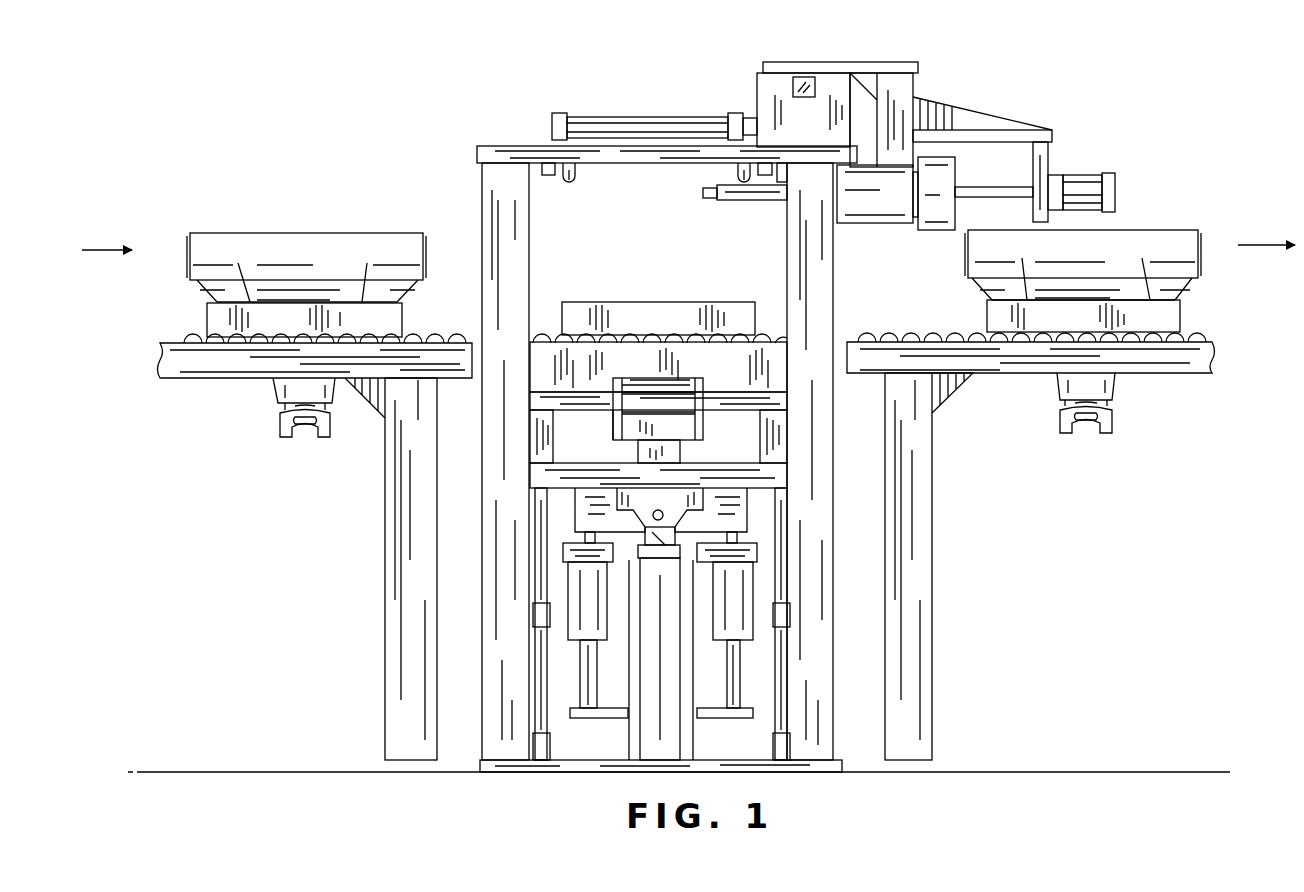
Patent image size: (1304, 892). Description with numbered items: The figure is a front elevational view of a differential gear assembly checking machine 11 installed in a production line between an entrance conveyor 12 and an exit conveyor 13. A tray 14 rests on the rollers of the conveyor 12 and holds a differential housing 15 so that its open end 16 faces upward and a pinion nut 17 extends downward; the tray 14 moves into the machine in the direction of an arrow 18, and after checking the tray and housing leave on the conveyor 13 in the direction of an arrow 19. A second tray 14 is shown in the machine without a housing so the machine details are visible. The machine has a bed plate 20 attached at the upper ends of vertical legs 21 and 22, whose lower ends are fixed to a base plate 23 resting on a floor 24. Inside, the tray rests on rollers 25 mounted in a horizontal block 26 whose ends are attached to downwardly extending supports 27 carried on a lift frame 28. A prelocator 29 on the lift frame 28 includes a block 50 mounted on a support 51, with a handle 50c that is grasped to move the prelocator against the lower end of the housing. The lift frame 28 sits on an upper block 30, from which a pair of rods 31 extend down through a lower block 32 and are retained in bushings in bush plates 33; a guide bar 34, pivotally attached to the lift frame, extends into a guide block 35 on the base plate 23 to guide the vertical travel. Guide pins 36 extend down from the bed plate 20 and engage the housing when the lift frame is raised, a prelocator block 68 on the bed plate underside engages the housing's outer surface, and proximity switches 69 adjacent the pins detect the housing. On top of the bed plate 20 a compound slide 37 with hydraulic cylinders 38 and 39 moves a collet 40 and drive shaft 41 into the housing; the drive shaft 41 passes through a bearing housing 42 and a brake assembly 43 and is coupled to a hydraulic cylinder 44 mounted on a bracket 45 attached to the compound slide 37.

The checking apparatus 11 is at (427, 95).
The entrance conveyor 12 is at (192, 380).
The exit conveyor 13 is at (1187, 377).
The tray 14 is at (620, 303).
The differential housing 15 is at (183, 265).
The open end 16 is at (280, 233).
The pinion nut 17 is at (300, 432).
The arrow 18 is at (95, 250).
The arrow 19 is at (1265, 245).
The bed plate 20 is at (478, 153).
The leg 21 is at (497, 493).
The leg 22 is at (823, 548).
The base plate 23 is at (600, 763).
The floor 24 is at (268, 772).
The rollers 25 is at (548, 337).
The block 26 is at (540, 400).
The supports 27 is at (540, 437).
The lift frame 28 is at (776, 478).
The prelocator 29 is at (615, 418).
The upper block 30 is at (580, 508).
The rods 31 is at (583, 683).
The lower block 32 is at (565, 548).
The bush plates 33 is at (572, 615).
The guide bar 34 is at (690, 540).
The guide block 35 is at (683, 740).
The guide pins 36 is at (575, 178).
The compound slide 37 is at (940, 83).
The hydraulic cylinder 38 is at (615, 117).
The hydraulic cylinder 39 is at (804, 77).
The collet 40 is at (705, 195).
The drive shaft 41 is at (975, 193).
The bearing housing 42 is at (885, 223).
The brake assembly 43 is at (932, 232).
The hydraulic cylinder 44 is at (1090, 185).
The bracket 45 is at (1043, 155).
The block 50 is at (680, 423).
The handle 50c is at (655, 378).
The support 51 is at (672, 452).
The prelocator block 68 is at (778, 182).
The proximity switches 69 is at (548, 165).